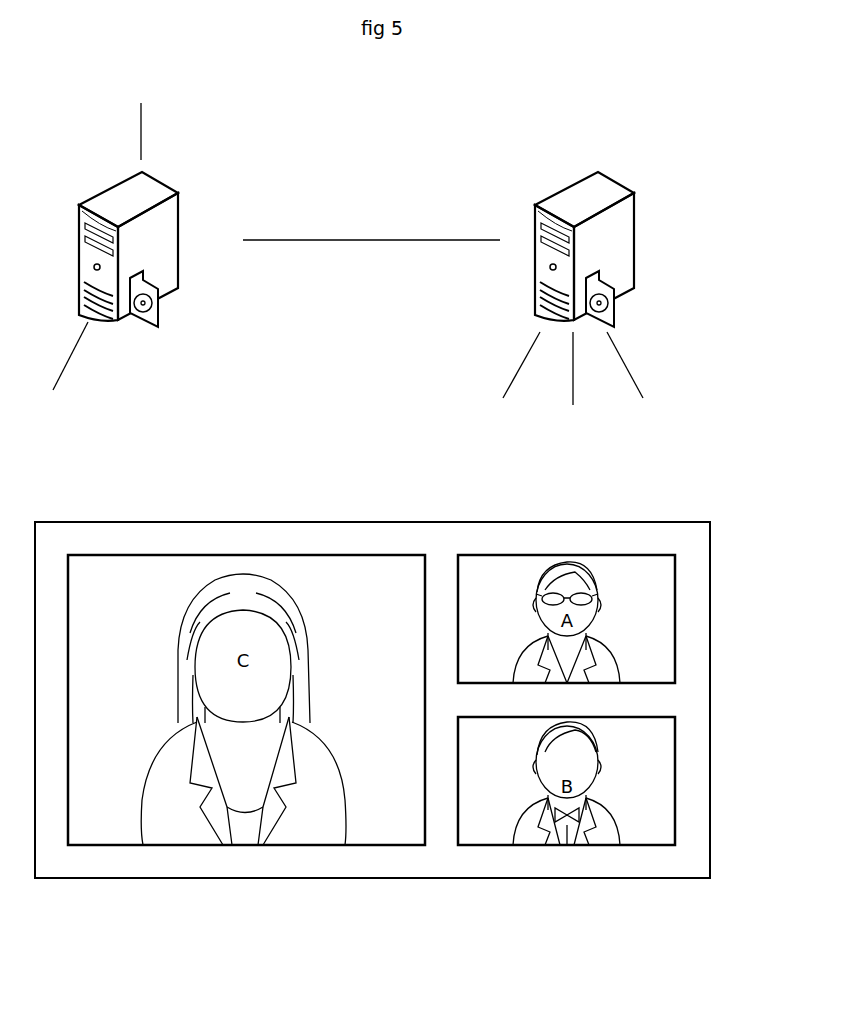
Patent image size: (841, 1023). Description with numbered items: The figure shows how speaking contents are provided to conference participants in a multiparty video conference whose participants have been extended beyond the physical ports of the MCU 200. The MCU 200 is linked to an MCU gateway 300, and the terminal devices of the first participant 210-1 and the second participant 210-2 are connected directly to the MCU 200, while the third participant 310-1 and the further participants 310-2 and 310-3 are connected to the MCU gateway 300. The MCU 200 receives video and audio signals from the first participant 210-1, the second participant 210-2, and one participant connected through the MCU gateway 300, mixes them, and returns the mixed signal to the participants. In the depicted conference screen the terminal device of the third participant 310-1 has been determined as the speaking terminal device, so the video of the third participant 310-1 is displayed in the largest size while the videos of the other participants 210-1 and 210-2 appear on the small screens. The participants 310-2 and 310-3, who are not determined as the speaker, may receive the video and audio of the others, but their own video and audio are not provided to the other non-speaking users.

The MCU 200 is at (176, 193).
The MCU gateway 300 is at (633, 193).
The first participant 210-1 is at (148, 87).
The second participant 210-2 is at (56, 408).
The third participant 310-1 is at (497, 432).
The participant 310-2 is at (573, 438).
The participant 310-3 is at (650, 428).